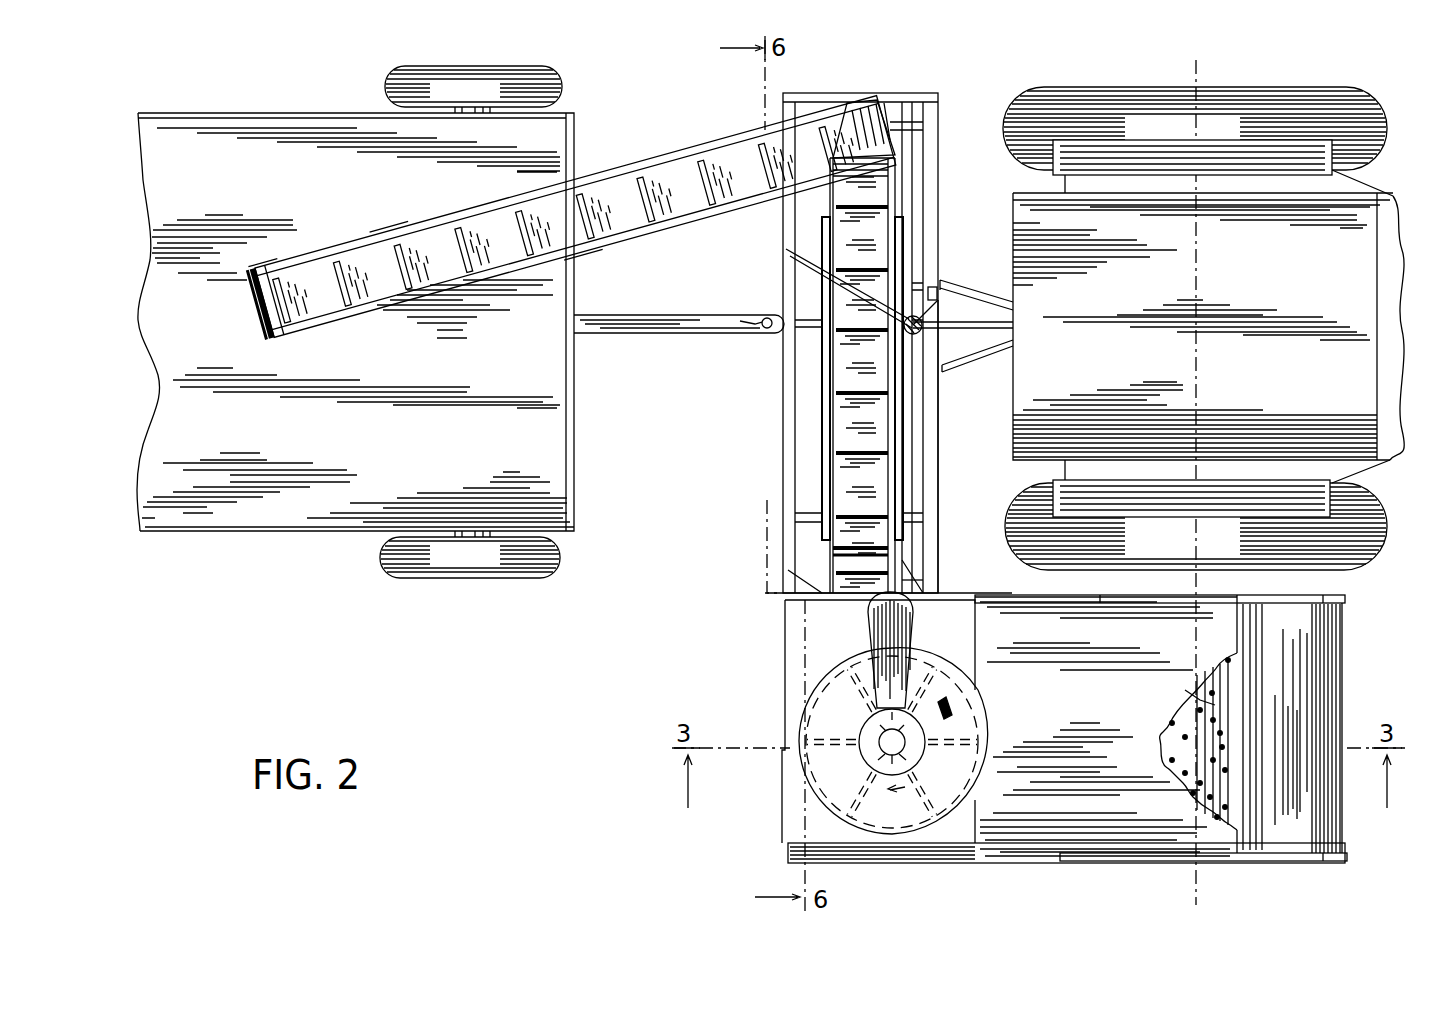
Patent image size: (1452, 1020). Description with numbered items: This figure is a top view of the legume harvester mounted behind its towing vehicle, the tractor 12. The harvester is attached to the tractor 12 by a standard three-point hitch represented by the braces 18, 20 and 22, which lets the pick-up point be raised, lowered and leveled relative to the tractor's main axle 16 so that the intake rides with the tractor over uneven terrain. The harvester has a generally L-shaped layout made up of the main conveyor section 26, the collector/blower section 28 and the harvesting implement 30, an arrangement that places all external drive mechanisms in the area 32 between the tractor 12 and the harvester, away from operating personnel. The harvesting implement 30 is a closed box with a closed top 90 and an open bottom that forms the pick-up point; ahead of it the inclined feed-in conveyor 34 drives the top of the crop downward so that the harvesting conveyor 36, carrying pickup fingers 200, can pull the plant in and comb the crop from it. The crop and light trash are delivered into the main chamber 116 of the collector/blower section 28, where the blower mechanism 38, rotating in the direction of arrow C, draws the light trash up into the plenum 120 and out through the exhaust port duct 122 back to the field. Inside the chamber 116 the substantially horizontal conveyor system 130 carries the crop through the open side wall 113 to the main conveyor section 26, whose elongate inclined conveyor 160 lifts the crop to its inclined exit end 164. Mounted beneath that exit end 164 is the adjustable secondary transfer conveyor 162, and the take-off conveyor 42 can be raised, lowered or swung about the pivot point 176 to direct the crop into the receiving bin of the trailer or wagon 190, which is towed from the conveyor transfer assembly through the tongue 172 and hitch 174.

The tractor 12 is at (970, 77).
The main axle 16 is at (1205, 95).
The brace 18 is at (1000, 296).
The brace 20 is at (997, 355).
The brace 22 is at (1018, 320).
The main conveyor section 26 is at (819, 414).
The collector/blower section 28 is at (868, 717).
The harvesting implement 30 is at (1360, 600).
The area designated by arrow 32 is at (961, 496).
The feed-in conveyor 34 is at (1310, 696).
The harvesting conveyor 36 is at (1233, 676).
The blower mechanism 38 is at (908, 632).
The take-off conveyor 42 is at (571, 217).
The closed top 90 is at (1120, 822).
The open side wall 113 is at (939, 586).
The main chamber 116 is at (948, 848).
The plenum 120 is at (990, 716).
The exhaust port duct 122 is at (793, 785).
The horizontal conveyor system 130 is at (900, 555).
The inclined conveyor 160 is at (875, 425).
The secondary transfer conveyor 162 is at (318, 272).
The inclined exit end 164 is at (875, 188).
The tongue 172 is at (640, 330).
The hitch 174 is at (752, 332).
The pivot point 176 is at (862, 122).
The wagon 190 is at (545, 150).
The pickup fingers 200 is at (1200, 700).